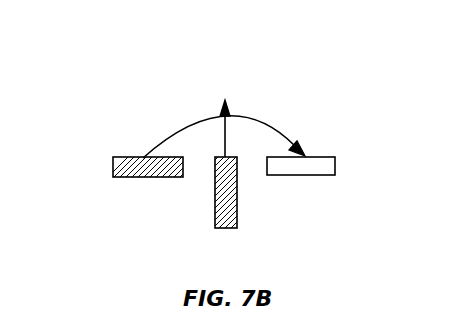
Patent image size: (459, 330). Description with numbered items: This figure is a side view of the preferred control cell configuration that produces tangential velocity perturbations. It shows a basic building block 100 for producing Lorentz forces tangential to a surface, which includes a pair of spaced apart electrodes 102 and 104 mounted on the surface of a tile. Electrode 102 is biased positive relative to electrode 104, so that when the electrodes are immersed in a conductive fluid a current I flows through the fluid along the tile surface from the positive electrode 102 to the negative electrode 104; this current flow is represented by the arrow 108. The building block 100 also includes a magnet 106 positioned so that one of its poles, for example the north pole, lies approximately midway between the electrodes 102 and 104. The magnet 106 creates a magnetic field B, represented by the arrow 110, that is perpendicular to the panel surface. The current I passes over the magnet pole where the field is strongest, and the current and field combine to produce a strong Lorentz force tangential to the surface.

The basic building block 100 is at (95, 84).
The electrode 102 is at (113, 158).
The electrode 104 is at (335, 163).
The magnet 106 is at (215, 207).
The arrow 108 is at (238, 117).
The arrow 110 is at (223, 137).